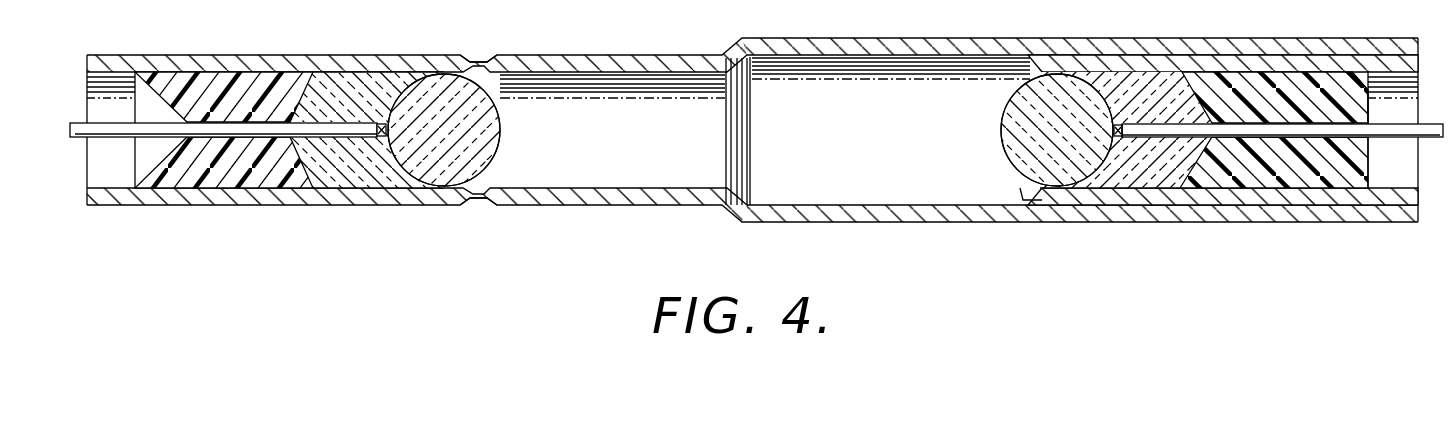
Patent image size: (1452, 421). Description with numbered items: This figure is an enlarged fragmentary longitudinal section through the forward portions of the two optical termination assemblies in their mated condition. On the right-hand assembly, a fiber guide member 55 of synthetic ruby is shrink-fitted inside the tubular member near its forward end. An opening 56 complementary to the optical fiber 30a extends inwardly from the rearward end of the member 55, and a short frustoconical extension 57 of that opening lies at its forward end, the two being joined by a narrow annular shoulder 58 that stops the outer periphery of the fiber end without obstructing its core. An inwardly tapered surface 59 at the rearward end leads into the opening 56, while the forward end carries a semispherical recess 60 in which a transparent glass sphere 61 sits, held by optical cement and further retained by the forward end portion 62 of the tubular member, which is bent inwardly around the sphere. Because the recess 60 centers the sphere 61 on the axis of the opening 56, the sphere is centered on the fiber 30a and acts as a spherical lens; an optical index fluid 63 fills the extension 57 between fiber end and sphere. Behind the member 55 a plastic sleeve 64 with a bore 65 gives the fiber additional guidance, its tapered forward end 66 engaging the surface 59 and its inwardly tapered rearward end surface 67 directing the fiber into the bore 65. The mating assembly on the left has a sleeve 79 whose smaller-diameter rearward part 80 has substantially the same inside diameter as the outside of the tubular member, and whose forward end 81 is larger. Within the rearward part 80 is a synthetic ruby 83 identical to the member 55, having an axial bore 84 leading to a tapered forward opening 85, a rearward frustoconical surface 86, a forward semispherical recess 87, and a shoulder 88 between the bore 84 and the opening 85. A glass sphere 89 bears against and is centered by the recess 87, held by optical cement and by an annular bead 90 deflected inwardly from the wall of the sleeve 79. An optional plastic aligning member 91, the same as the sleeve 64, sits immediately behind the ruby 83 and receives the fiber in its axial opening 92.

The optical fiber 30a is at (1380, 137).
The fiber guide member 55 is at (1165, 72).
The opening 56 is at (1168, 140).
The frustoconical extension 57 is at (1114, 135).
The annular shoulder 58 is at (1122, 137).
The inwardly tapered surface 59 is at (1232, 72).
The recess 60 is at (1100, 88).
The sphere 61 is at (1003, 118).
The forward end portion 62 is at (1028, 62).
The optical index fluid 63 is at (1118, 118).
The plastic sleeve 64 is at (1300, 72).
The bore 65 is at (1265, 138).
The forward end 66 is at (1205, 190).
The rearward end surface 67 is at (1325, 100).
The sleeve 79 is at (655, 53).
The rearward part 80 is at (612, 200).
The forward end 81 is at (928, 218).
The synthetic ruby 83 is at (350, 190).
The axial bore 84 is at (367, 130).
The tapered forward opening 85 is at (382, 139).
The rearward frustoconical surface 86 is at (262, 188).
The forward semispherical recess 87 is at (432, 82).
The shoulder 88 is at (379, 124).
The glass sphere 89 is at (499, 128).
The annular bead 90 is at (478, 203).
The plastic aligning member 91 is at (185, 188).
The axial opening 92 is at (240, 124).